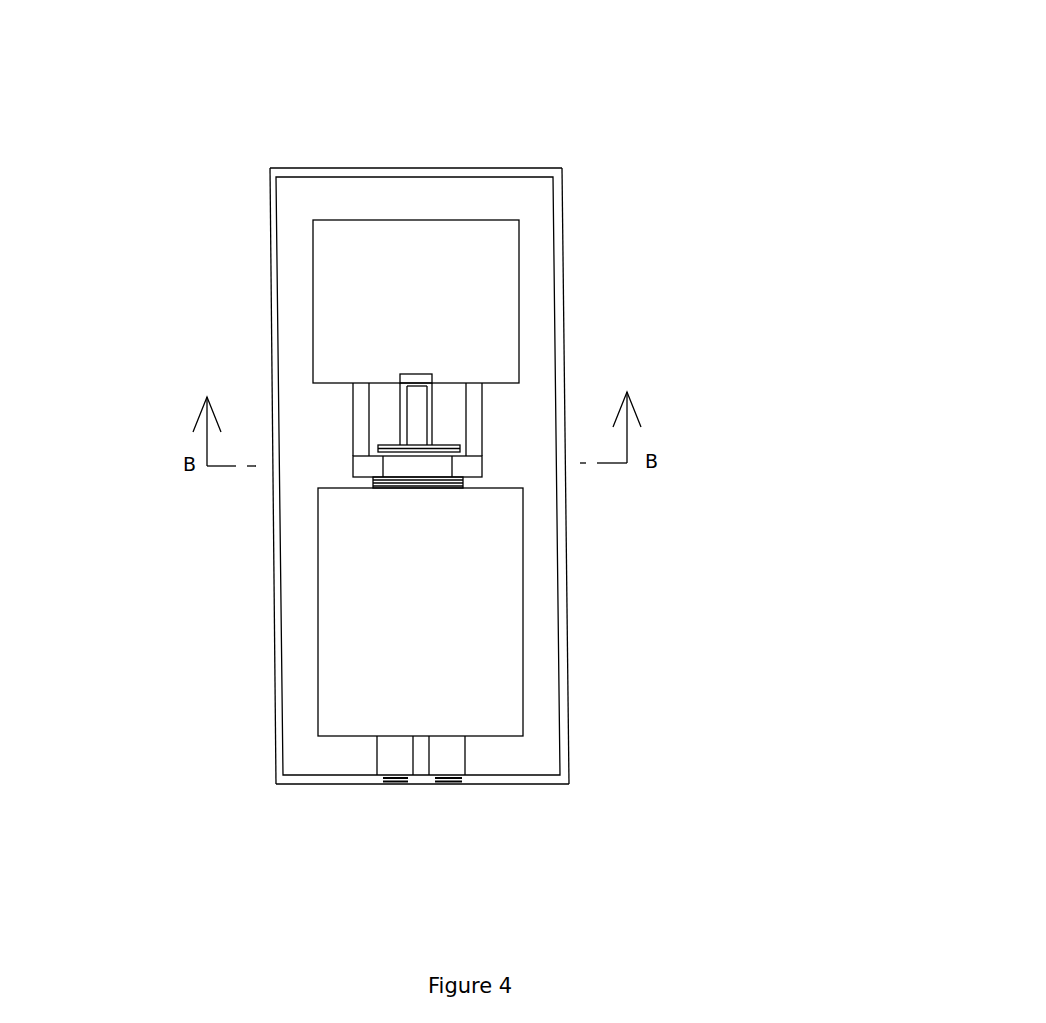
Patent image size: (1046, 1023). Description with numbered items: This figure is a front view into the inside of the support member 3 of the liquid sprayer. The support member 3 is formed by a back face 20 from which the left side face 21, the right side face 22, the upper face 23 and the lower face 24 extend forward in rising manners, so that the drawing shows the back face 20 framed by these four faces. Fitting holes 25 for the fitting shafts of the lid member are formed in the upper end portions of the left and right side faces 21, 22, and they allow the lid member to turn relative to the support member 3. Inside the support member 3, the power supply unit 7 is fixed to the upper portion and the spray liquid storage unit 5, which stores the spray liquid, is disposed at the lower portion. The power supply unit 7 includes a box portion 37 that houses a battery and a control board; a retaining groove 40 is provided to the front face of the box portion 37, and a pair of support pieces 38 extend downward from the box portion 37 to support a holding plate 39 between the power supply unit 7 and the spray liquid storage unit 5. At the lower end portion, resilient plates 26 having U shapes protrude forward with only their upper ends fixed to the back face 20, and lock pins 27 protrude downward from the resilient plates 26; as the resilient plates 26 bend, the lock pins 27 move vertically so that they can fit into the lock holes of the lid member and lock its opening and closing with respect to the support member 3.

The support member 3 is at (548, 78).
The upper face 23 is at (405, 168).
The fitting hole 25 is at (562, 190).
The power supply unit 7 is at (515, 248).
The box portion 37 is at (380, 290).
The retaining groove 40 is at (435, 380).
The support piece 38 is at (480, 405).
The holding plate 39 is at (488, 466).
The right side face 22 is at (566, 538).
The left side face 21 is at (278, 580).
The spray liquid storage unit 5 is at (523, 610).
The back face 20 is at (543, 712).
The lower face 24 is at (535, 784).
The lock pin 27 is at (395, 764).
The resilient plate 26 is at (410, 779).